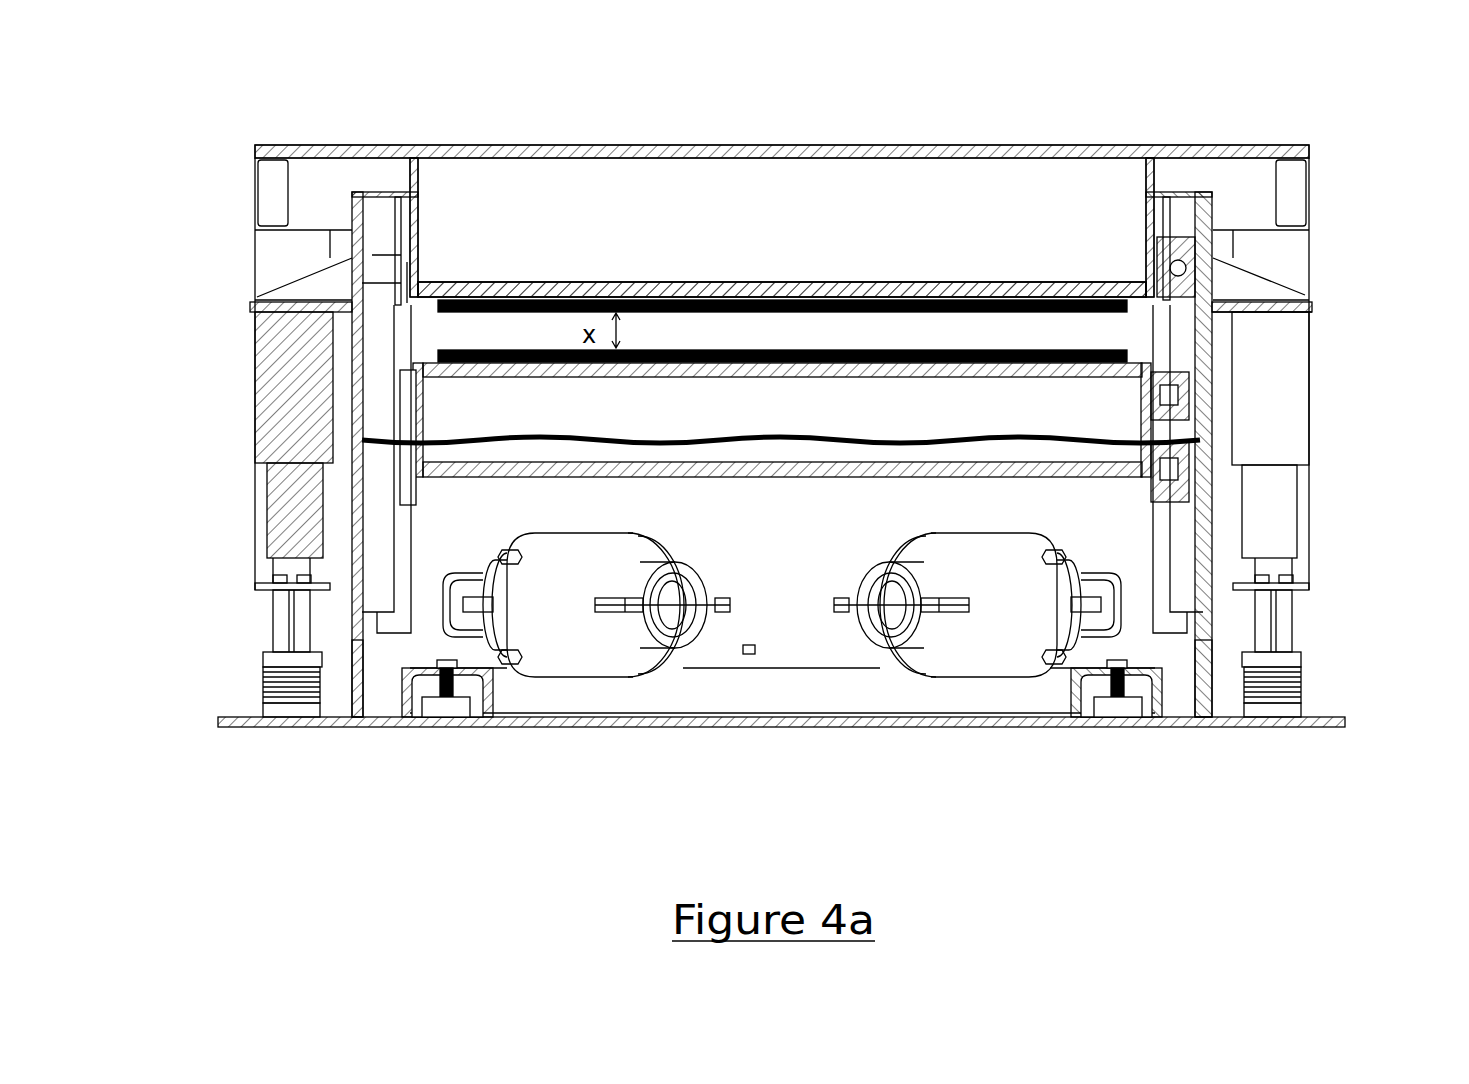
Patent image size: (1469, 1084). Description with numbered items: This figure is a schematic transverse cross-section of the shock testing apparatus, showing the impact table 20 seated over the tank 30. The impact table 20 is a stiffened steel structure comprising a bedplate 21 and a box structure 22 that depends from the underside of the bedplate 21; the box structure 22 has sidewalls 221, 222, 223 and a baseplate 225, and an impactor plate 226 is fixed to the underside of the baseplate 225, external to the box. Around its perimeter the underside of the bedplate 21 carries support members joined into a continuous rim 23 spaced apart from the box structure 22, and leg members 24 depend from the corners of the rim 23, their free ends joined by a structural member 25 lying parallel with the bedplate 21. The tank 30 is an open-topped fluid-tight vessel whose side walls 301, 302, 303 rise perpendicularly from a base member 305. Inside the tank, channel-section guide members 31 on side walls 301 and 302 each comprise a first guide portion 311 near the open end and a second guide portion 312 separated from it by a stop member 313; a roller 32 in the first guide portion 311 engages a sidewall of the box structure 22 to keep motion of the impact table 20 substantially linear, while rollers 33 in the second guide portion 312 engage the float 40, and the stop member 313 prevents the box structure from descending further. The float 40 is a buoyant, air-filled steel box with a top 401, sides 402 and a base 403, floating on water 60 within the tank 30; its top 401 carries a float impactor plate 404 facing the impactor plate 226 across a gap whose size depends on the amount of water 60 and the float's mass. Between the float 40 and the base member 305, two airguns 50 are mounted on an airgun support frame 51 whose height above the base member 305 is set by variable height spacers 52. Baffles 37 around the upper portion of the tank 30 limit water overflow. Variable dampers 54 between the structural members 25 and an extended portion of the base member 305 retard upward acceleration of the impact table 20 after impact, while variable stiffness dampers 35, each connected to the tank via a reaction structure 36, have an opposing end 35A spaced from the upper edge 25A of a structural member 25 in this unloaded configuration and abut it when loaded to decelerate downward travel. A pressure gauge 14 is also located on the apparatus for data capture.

The pressure gauge 14 is at (746, 655).
The impact table 20 is at (1157, 150).
The bedplate 21 is at (900, 145).
The box structure 22 is at (643, 165).
The sidewall 221 is at (418, 222).
The sidewall 222 is at (1147, 212).
The sidewall 223 is at (567, 220).
The baseplate 225 is at (727, 282).
The impactor plate 226 is at (838, 282).
The rim 23 is at (278, 188).
The leg member 24 is at (272, 270).
The structural member 25 is at (283, 625).
The upper edge 25A is at (1310, 585).
The tank 30 is at (780, 658).
The side wall 301 is at (367, 695).
The side wall 302 is at (1200, 692).
The side wall 303 is at (805, 542).
The base member 305 is at (300, 728).
The channel-section guide member 31 is at (380, 563).
The first guide portion 311 is at (1158, 232).
The second guide portion 312 is at (1188, 517).
The stop member 313 is at (1215, 313).
The roller 32 is at (1165, 247).
The roller 33 is at (1197, 423).
The variable stiffness damper 35 is at (1278, 442).
The opposing end 35A is at (1278, 522).
The reaction structure 36 is at (303, 287).
The baffle 37 is at (385, 258).
The float 40 is at (475, 432).
The top 401 is at (417, 362).
The sides 402 is at (440, 407).
The base 403 is at (325, 596).
The float impactor plate 404 is at (560, 348).
The airgun 50 is at (577, 670).
The airgun support frame 51 is at (930, 697).
The variable height spacer 52 is at (447, 698).
The variable damper 54 is at (300, 693).
The water 60 is at (517, 476).